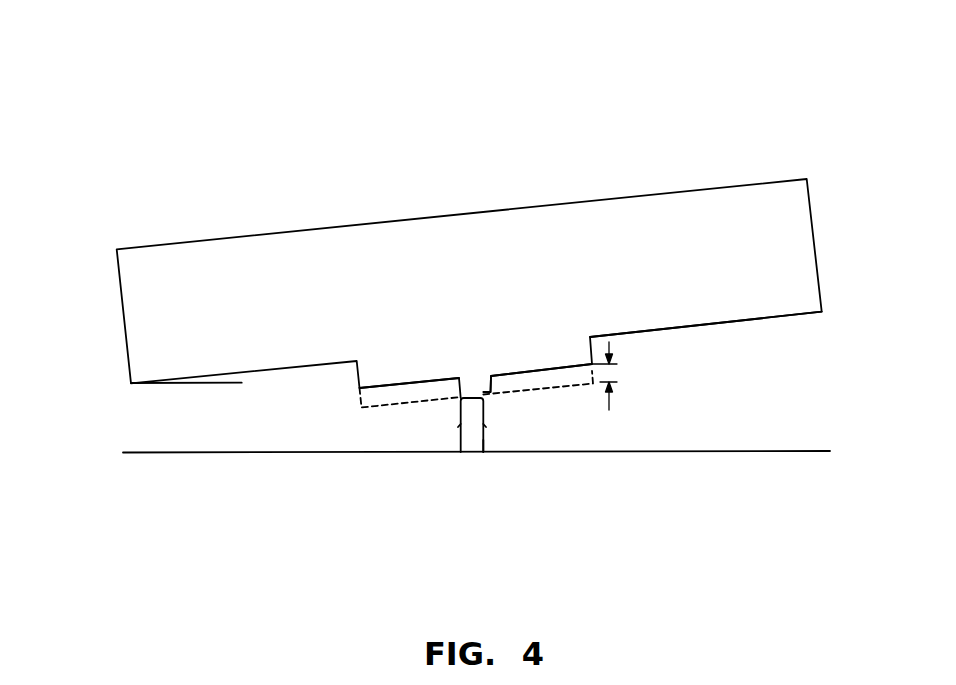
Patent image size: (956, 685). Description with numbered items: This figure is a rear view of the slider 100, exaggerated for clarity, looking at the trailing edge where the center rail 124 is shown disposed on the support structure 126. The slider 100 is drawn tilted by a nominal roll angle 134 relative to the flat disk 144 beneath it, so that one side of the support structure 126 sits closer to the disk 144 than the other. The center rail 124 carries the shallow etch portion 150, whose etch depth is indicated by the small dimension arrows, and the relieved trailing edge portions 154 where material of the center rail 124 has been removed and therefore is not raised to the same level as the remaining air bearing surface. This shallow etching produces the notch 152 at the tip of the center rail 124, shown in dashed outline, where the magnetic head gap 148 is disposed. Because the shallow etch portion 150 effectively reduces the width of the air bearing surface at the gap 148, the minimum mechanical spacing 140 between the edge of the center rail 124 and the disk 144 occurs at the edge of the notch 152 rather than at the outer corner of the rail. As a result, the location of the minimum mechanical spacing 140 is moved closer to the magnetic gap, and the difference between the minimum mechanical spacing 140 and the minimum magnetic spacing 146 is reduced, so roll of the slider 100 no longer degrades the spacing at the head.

The slider 100 is at (417, 132).
The center rail 124 is at (565, 348).
The support structure 126 is at (748, 322).
The nominal roll angle 134 is at (175, 404).
The minimum mechanical spacing 140 is at (457, 425).
The disk 144 is at (742, 451).
The minimum magnetic spacing 146 is at (487, 425).
The magnetic head gap 148 is at (517, 438).
The shallow etch portion 150 is at (620, 373).
The notch 152 is at (452, 390).
The relieved trailing edge portions 154 is at (393, 387).